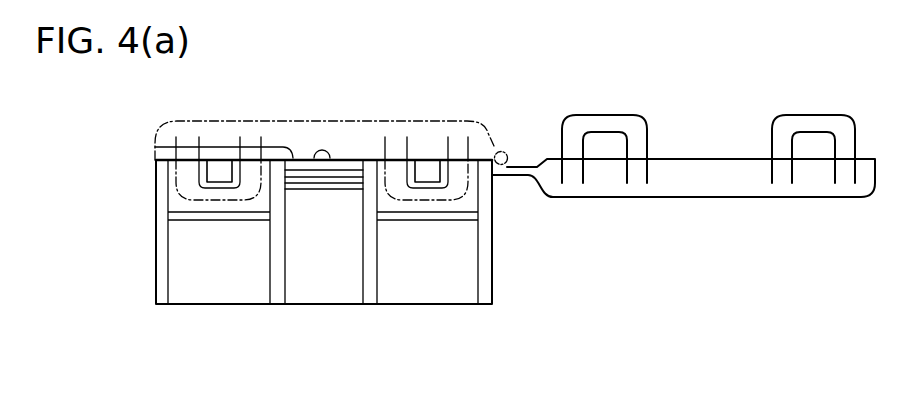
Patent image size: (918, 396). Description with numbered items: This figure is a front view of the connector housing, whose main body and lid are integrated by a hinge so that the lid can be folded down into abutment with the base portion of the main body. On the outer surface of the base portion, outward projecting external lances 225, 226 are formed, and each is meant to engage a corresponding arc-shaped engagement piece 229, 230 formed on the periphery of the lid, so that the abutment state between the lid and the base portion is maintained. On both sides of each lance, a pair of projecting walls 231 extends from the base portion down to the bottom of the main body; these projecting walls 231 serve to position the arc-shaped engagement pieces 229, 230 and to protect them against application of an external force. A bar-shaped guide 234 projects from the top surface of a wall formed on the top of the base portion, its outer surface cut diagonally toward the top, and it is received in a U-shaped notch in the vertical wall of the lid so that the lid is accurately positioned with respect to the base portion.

The external lance 225 is at (445, 180).
The external lance 226 is at (238, 179).
The arc-shaped engagement piece 229 is at (797, 115).
The arc-shaped engagement piece 230 is at (597, 115).
The projecting wall 231 is at (163, 290).
The bar-shaped guide 234 is at (325, 149).